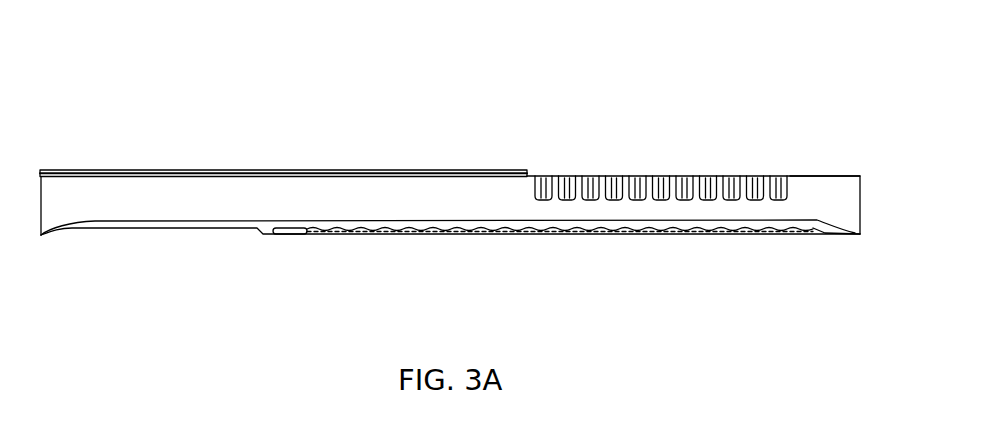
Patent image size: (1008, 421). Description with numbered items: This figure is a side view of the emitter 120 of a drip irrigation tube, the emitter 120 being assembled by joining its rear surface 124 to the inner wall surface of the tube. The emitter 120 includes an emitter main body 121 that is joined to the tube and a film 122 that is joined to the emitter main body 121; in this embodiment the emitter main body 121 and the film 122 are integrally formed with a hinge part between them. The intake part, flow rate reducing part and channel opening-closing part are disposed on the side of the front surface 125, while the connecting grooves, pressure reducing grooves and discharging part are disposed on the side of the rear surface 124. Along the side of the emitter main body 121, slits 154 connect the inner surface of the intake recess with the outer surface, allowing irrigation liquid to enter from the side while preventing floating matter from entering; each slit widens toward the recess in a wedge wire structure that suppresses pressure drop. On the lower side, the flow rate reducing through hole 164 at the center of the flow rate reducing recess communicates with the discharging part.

The emitter 120 is at (755, 87).
The emitter main body 121 is at (55, 180).
The film 122 is at (105, 173).
The rear surface 124 is at (848, 236).
The front surface 125 is at (818, 174).
The slits 154 is at (660, 175).
The flow rate reducing through hole 164 is at (292, 234).